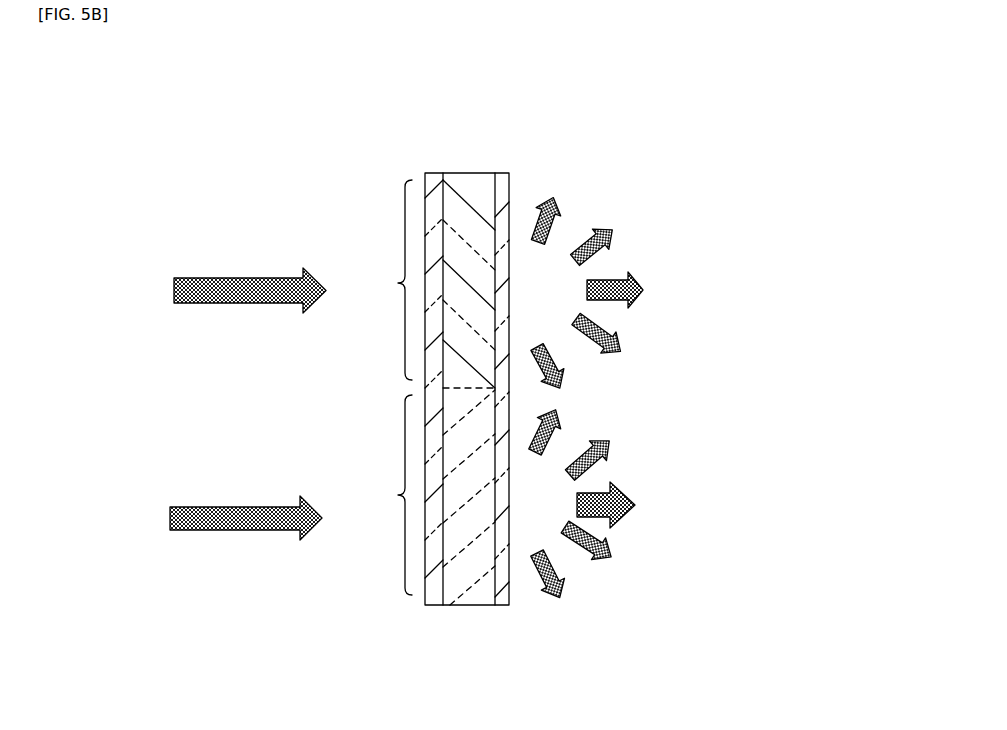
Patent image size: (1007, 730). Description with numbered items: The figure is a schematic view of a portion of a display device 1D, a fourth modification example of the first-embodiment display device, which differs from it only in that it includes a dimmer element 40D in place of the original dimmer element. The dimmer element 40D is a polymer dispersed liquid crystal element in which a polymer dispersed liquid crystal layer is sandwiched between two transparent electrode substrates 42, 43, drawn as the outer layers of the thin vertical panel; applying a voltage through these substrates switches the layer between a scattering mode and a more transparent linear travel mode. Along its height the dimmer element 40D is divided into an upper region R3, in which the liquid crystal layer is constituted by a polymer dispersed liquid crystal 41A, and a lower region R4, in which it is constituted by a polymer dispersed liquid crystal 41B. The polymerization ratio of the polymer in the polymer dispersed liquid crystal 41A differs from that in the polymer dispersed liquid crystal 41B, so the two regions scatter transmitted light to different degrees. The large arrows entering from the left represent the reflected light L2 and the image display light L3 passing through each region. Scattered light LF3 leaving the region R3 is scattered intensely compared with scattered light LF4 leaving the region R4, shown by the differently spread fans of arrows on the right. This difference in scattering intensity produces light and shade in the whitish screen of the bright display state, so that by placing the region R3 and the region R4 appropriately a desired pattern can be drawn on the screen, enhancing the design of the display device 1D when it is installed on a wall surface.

The display device 1D is at (721, 135).
The dimmer element 40D is at (517, 89).
The transparent electrode substrate 42 is at (430, 173).
The transparent electrode substrate 43 is at (498, 173).
The polymer dispersed liquid crystal 41A is at (468, 182).
The polymer dispersed liquid crystal 41B is at (475, 605).
The region R3 is at (386, 280).
The region R4 is at (386, 495).
The reflected light L2 is at (248, 440).
The image display light L3 is at (227, 303).
The scattered light LF3 is at (604, 293).
The scattered light LF4 is at (621, 503).